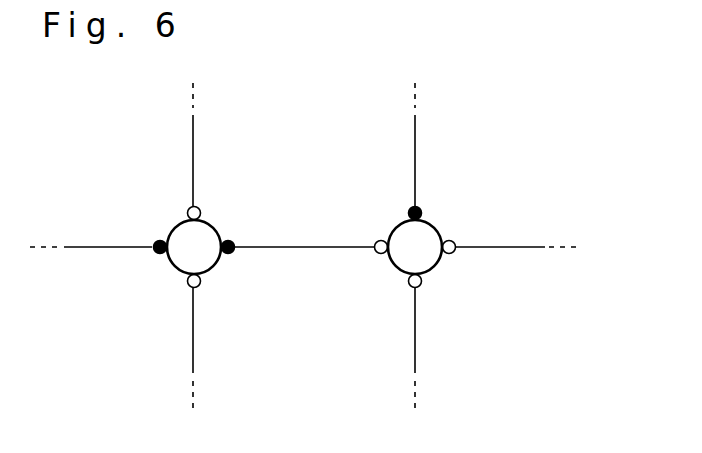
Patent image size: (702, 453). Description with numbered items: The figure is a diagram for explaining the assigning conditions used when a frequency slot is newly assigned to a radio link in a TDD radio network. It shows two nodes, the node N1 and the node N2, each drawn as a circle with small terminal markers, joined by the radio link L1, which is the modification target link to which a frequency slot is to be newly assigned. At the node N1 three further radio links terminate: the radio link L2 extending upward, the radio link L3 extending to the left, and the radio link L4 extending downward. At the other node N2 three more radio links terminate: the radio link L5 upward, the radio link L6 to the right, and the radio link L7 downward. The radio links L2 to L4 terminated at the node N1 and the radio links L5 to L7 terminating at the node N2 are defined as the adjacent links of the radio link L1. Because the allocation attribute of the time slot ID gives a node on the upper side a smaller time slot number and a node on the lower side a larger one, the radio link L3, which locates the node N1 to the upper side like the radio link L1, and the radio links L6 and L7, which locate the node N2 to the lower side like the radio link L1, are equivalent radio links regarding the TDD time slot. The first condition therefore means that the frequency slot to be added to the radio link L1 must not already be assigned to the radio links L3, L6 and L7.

The radio link L1 is at (280, 247).
The radio link L2 is at (193, 152).
The radio link L3 is at (88, 247).
The radio link L4 is at (193, 335).
The radio link L5 is at (415, 152).
The radio link L6 is at (493, 247).
The radio link L7 is at (415, 335).
The node N1 is at (194, 247).
The node N2 is at (415, 247).